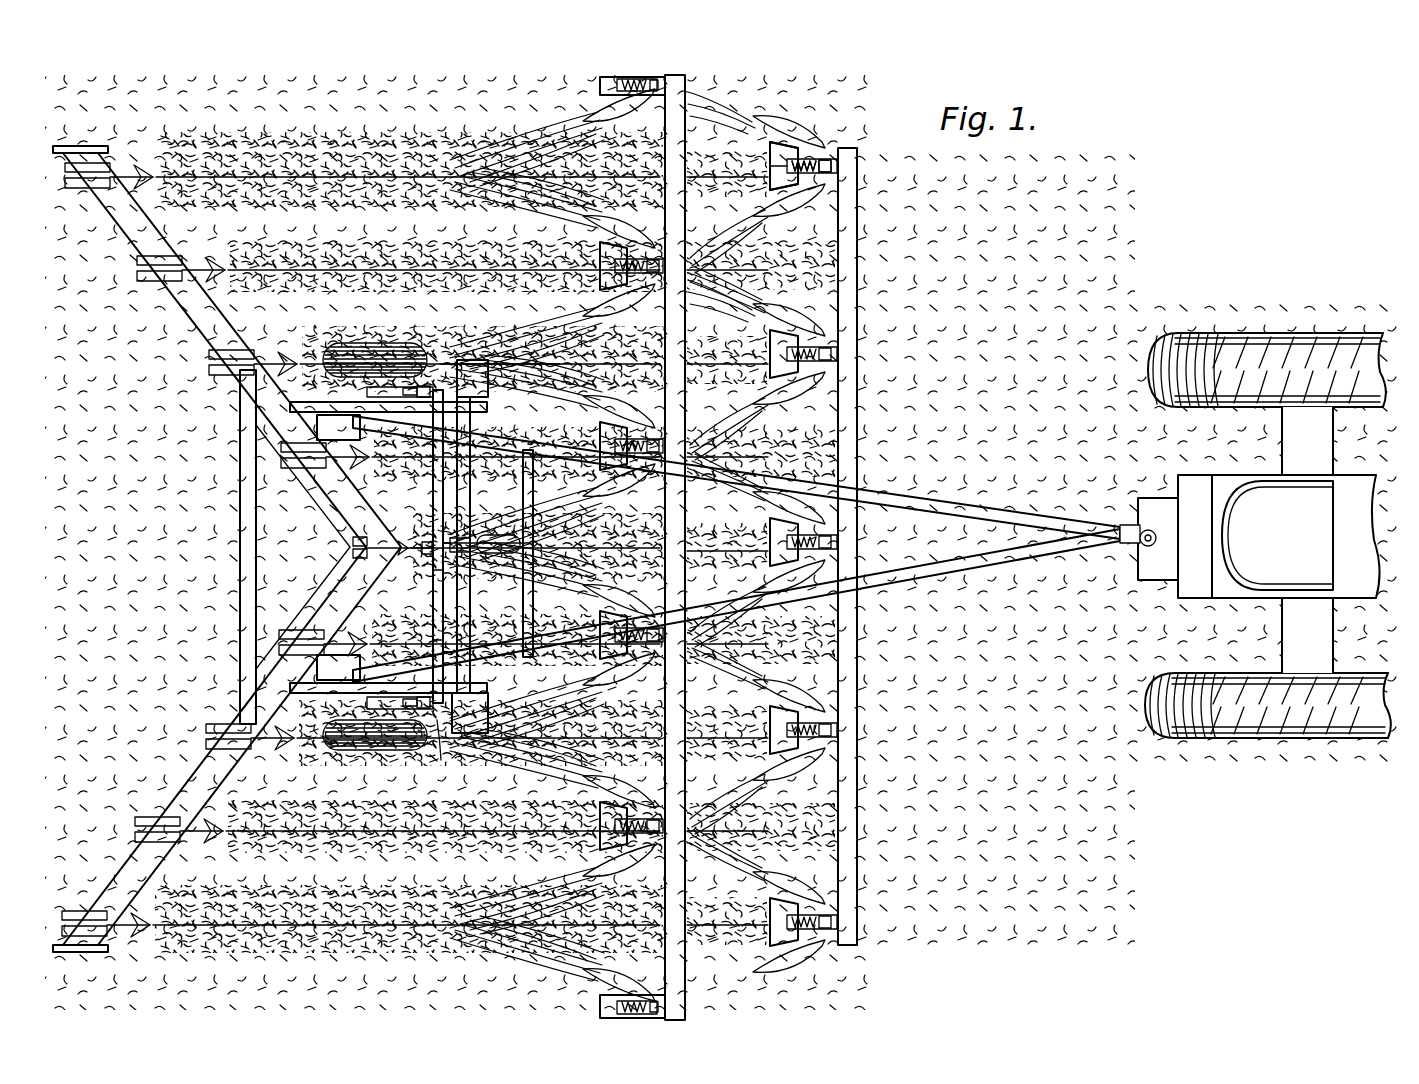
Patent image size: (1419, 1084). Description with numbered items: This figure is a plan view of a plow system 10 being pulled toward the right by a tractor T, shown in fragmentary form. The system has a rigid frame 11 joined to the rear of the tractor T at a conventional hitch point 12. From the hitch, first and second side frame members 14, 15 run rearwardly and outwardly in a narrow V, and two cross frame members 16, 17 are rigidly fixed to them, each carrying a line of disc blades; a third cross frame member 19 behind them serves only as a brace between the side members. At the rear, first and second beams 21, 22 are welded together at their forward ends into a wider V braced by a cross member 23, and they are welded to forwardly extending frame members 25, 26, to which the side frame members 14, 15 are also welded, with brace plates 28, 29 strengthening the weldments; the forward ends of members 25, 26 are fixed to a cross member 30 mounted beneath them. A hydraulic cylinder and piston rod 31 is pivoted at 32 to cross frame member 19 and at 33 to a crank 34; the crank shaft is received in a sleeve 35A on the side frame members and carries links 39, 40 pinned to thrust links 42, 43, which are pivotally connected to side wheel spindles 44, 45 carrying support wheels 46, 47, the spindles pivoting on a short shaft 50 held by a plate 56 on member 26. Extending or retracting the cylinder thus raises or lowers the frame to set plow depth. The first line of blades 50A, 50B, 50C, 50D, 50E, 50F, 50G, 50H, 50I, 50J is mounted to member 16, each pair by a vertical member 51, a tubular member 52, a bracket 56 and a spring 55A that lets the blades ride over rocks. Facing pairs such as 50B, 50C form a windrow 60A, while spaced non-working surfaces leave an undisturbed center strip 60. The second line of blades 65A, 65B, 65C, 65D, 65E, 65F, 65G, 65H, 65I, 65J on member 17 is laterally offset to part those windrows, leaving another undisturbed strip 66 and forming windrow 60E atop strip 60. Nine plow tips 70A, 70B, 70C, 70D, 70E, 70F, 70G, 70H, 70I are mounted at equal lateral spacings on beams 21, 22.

The plow system 10 is at (723, 547).
The rigid frame 11 is at (736, 549).
The hitch point 12 is at (1150, 547).
The first side frame member 14 is at (990, 508).
The second side frame member 15 is at (947, 574).
The first cross frame member 16 is at (858, 428).
The second cross frame member 17 is at (687, 508).
The third cross frame member 19 is at (523, 492).
The first beam 21 is at (190, 316).
The second beam 22 is at (196, 785).
The cross member 23 is at (240, 497).
The forwardly extending frame member 25 is at (303, 408).
The forwardly extending frame member 26 is at (311, 691).
The brace plate 28 is at (343, 438).
The brace plate 29 is at (343, 678).
The cross member 30 is at (462, 478).
The hydraulic cylinder and piston rod 31 is at (522, 530).
The cylinder end pivot 32 is at (520, 568).
The rod end pivot 33 is at (463, 540).
The crank 34 is at (440, 577).
The sleeve 35A is at (433, 638).
The link 39 is at (440, 722).
The link 40 is at (460, 358).
The thrust link 42 is at (415, 710).
The thrust link 43 is at (410, 386).
The side wheel spindle 44 is at (390, 710).
The side wheel spindle 45 is at (380, 347).
The support wheel 46 is at (337, 752).
The support wheel 47 is at (330, 342).
The short shaft 50 is at (490, 717).
The disc blade 50A is at (778, 140).
The disc blade 50B is at (790, 200).
The disc blade 50C is at (803, 326).
The disc blade 50D is at (797, 384).
The disc blade 50E is at (787, 503).
The disc blade 50F is at (805, 582).
The disc blade 50G is at (793, 703).
The disc blade 50H is at (800, 766).
The disc blade 50I is at (793, 890).
The disc blade 50J is at (805, 940).
The vertical member 51 is at (822, 162).
The tubular member 52 is at (813, 158).
The spring 55A is at (826, 172).
The bracket 56 is at (767, 183).
The center strip 60 is at (703, 180).
The windrow 60A is at (703, 272).
The windrow 60E is at (430, 158).
The disc blade 65A is at (598, 112).
The disc blade 65B is at (618, 236).
The disc blade 65C is at (625, 286).
The disc blade 65D is at (640, 397).
The disc blade 65E is at (618, 478).
The disc blade 65F is at (623, 603).
The disc blade 65G is at (628, 668).
The disc blade 65H is at (623, 788).
The disc blade 65I is at (630, 858).
The disc blade 65J is at (598, 1003).
The undisturbed strip 66 is at (552, 250).
The plow tip 70A is at (140, 152).
The plow tip 70B is at (214, 254).
The plow tip 70C is at (254, 347).
The plow tip 70D is at (290, 471).
The plow tip 70E is at (353, 551).
The plow tip 70F is at (364, 630).
The plow tip 70G is at (274, 750).
The plow tip 70H is at (199, 838).
The plow tip 70I is at (130, 944).
The tractor T is at (1223, 474).